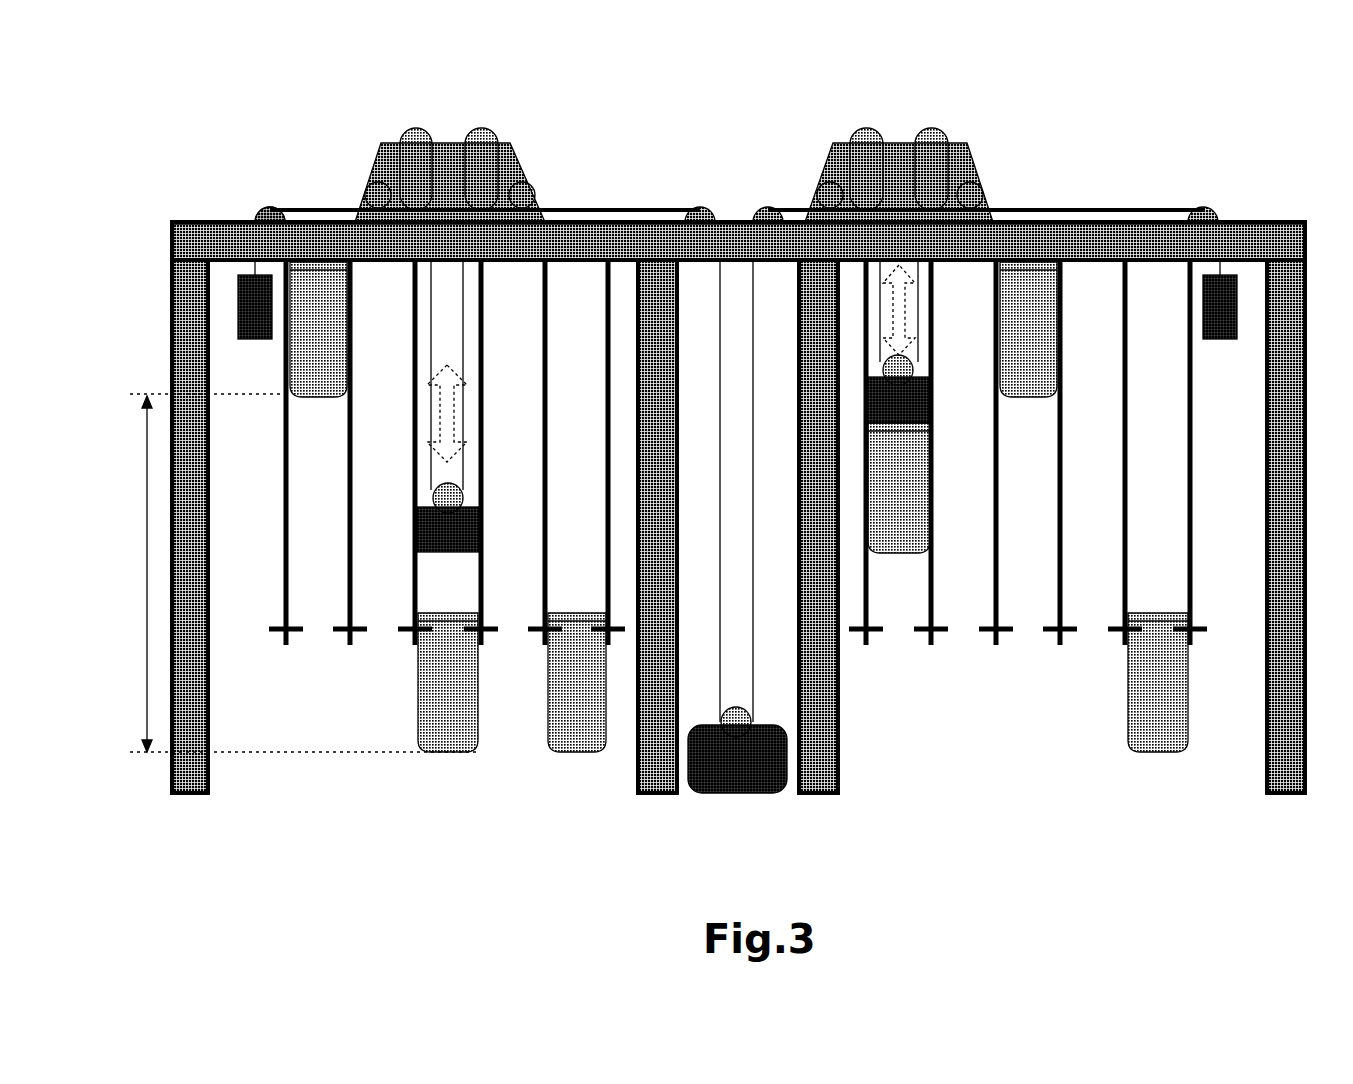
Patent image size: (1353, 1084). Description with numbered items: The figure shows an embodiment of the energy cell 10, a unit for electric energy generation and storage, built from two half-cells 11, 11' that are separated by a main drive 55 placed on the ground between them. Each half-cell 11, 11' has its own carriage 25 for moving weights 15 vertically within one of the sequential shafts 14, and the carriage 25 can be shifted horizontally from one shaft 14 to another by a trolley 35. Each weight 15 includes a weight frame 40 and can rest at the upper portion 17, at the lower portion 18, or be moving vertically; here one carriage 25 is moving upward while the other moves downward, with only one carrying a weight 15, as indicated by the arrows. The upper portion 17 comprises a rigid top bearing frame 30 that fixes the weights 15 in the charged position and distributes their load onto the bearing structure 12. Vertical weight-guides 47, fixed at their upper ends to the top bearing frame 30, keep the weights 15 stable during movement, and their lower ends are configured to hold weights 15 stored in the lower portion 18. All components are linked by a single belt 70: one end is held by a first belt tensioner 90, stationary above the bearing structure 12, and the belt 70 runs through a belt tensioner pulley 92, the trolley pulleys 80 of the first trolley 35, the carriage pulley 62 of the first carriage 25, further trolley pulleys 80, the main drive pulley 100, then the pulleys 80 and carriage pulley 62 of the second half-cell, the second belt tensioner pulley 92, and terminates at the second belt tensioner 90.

The energy cell 10 is at (1028, 78).
The half-cell 11 is at (301, 120).
The half-cell 11' is at (1165, 117).
The bearing structure 12 is at (208, 793).
The shaft 14 is at (572, 370).
The weight 15 is at (340, 380).
The upper portion 17 is at (170, 246).
The lower portion 18 is at (160, 628).
The carriage 25 is at (475, 530).
The top bearing frame 30 is at (205, 240).
The trolley 35 is at (510, 165).
The weight frame 40 is at (345, 268).
The weight-guide 47 is at (608, 588).
The main drive 55 is at (735, 800).
The carriage pulley 62 is at (445, 498).
The belt 70 is at (465, 430).
The trolley pulley 80 is at (410, 135).
The belt tensioner 90 is at (255, 338).
The belt tensioner pulley 92 is at (268, 212).
The main drive pulley 100 is at (740, 718).